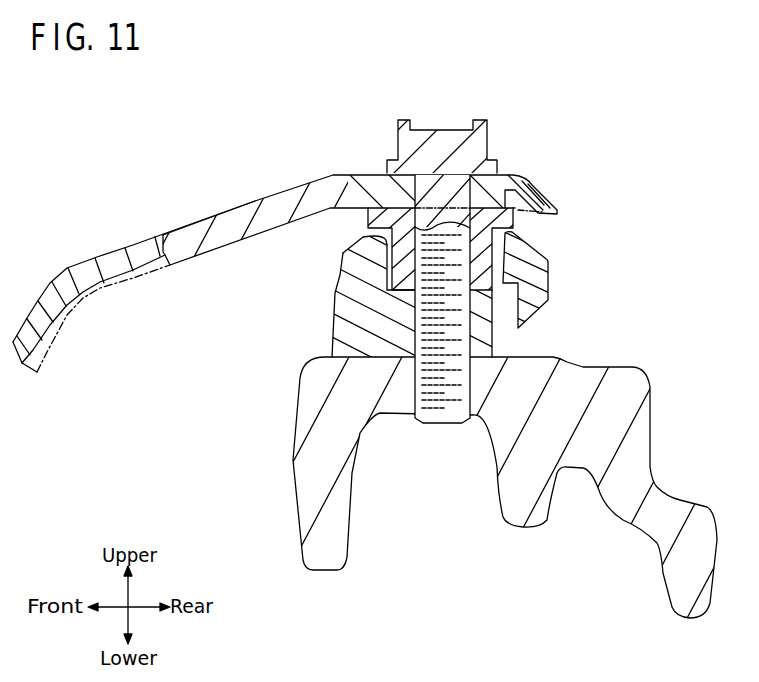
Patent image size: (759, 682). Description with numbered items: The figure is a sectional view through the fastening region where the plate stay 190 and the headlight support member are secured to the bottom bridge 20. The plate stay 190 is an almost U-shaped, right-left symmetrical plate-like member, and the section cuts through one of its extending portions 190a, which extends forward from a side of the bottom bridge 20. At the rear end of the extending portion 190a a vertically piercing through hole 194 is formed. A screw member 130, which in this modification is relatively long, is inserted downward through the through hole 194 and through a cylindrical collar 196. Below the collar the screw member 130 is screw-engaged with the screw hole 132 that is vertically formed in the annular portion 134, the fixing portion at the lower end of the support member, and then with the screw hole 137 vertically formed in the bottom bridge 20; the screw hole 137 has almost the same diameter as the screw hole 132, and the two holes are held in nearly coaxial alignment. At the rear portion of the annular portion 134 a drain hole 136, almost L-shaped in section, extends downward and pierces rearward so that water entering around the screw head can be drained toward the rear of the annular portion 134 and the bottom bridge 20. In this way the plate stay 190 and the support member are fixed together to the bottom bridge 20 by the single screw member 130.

The bottom bridge 20 is at (638, 428).
The screw member 130 is at (407, 143).
The screw hole 132 is at (428, 318).
The annular portion 134 is at (352, 295).
The drain hole 136 is at (512, 307).
The screw hole 137 is at (465, 388).
The plate stay 190 is at (97, 242).
The extending portion 190a is at (248, 206).
The through hole 194 is at (417, 187).
The cylindrical collar 196 is at (372, 212).